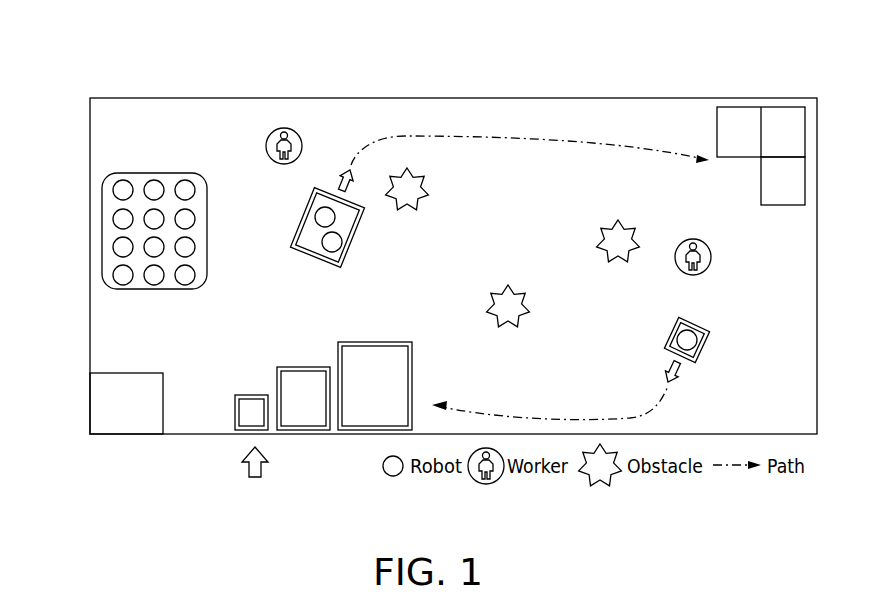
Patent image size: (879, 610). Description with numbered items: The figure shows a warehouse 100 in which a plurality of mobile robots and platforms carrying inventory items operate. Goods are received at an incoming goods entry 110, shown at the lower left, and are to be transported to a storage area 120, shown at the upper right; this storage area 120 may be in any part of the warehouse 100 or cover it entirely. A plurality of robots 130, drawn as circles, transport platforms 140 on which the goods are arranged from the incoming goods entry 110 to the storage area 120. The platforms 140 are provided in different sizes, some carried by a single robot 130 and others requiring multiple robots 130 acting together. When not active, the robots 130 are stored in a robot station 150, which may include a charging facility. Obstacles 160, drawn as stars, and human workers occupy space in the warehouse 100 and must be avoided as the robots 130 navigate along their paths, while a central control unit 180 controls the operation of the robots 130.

The warehouse 100 is at (530, 77).
The incoming goods entry 110 is at (277, 143).
The storage area 120 is at (730, 142).
The robot 130 is at (150, 222).
The platform 140 is at (253, 410).
The robot station 150 is at (200, 269).
The obstacle 160 is at (600, 245).
The central control unit 180 is at (126, 403).